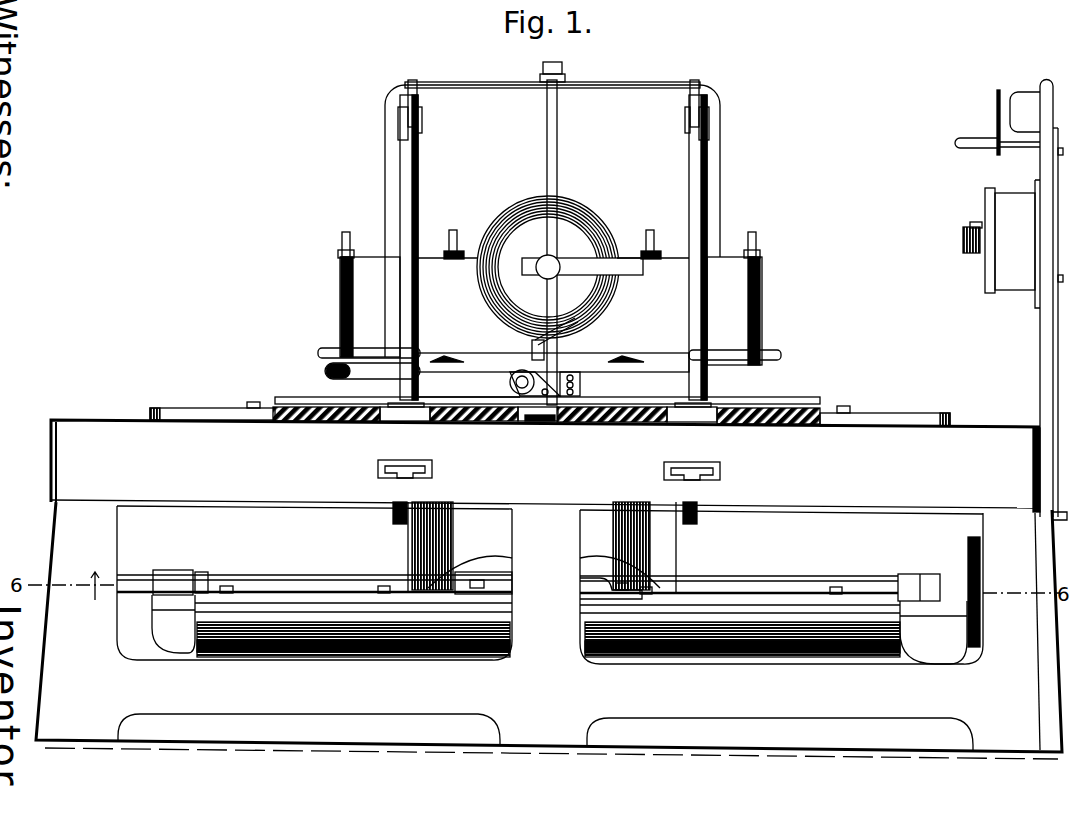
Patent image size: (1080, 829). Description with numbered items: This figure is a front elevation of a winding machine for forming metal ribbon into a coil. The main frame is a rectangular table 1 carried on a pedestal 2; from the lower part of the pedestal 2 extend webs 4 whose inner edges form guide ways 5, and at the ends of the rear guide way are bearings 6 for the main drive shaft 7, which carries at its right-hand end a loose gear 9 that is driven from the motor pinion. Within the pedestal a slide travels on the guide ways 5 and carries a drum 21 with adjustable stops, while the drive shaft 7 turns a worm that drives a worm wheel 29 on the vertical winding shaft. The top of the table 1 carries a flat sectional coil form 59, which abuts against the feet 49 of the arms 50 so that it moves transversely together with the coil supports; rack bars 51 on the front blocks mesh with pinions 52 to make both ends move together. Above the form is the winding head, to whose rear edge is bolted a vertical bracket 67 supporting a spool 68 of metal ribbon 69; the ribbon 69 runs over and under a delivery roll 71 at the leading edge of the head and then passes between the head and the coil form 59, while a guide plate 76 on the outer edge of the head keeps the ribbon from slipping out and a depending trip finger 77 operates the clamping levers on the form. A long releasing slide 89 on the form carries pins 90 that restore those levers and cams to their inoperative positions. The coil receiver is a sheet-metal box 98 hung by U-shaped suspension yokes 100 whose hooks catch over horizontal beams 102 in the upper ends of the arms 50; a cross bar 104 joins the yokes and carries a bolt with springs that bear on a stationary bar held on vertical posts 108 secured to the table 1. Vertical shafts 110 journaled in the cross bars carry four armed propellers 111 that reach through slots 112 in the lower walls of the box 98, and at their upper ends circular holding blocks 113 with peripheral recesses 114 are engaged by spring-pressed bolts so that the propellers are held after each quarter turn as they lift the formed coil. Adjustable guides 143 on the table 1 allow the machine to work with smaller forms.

The table 1 is at (218, 497).
The pedestal 2 is at (112, 550).
The webs 4 is at (822, 605).
The guide ways 5 is at (270, 596).
The bearings 6 is at (175, 570).
The main drive shaft 7 is at (770, 584).
The loose gear 9 is at (968, 545).
The drum 21 is at (690, 553).
The worm wheel 29 is at (600, 592).
The feet 49 is at (388, 409).
The arms 50 is at (418, 184).
The rack bars 51 is at (402, 465).
The pinions 52 is at (394, 518).
The coil form 59 is at (493, 412).
The vertical bracket 67 is at (582, 368).
The spool 68 is at (560, 267).
The metal ribbon 69 is at (532, 362).
The delivery roll 71 is at (510, 383).
The guide plate 76 is at (530, 404).
The trip finger 77 is at (575, 402).
The releasing slide 89 is at (460, 404).
The pins 90 is at (328, 404).
The box 98 is at (468, 264).
The suspension yoke 100 is at (385, 169).
The horizontal beams 102 is at (400, 116).
The cross bar 104 is at (476, 82).
The vertical posts 108 is at (557, 151).
The vertical shafts 110 is at (342, 240).
The four armed propellers 111 is at (318, 354).
The slots 112 is at (440, 356).
The circular holding blocks 113 is at (340, 252).
The peripheral recesses 114 is at (338, 254).
The adjustable guides 143 is at (190, 414).